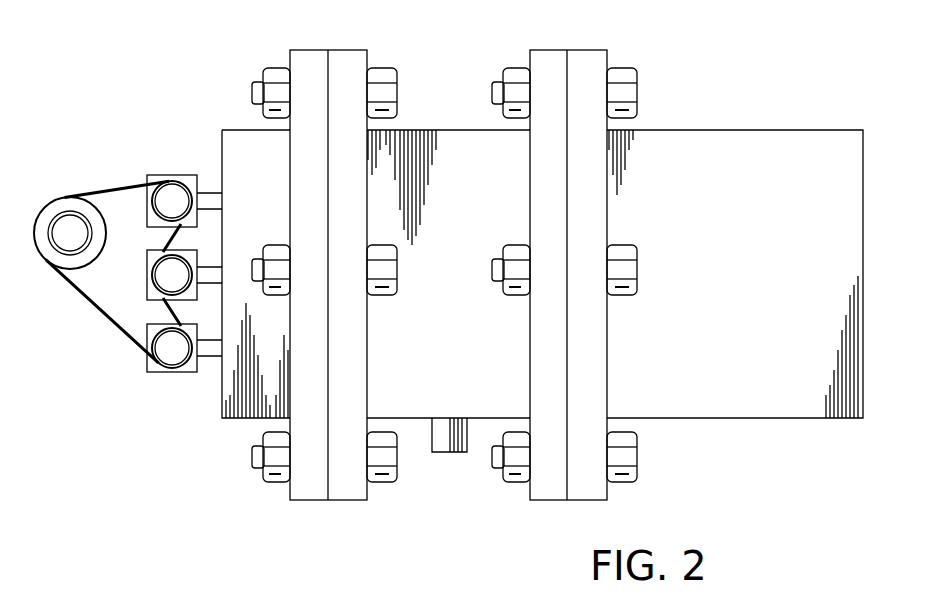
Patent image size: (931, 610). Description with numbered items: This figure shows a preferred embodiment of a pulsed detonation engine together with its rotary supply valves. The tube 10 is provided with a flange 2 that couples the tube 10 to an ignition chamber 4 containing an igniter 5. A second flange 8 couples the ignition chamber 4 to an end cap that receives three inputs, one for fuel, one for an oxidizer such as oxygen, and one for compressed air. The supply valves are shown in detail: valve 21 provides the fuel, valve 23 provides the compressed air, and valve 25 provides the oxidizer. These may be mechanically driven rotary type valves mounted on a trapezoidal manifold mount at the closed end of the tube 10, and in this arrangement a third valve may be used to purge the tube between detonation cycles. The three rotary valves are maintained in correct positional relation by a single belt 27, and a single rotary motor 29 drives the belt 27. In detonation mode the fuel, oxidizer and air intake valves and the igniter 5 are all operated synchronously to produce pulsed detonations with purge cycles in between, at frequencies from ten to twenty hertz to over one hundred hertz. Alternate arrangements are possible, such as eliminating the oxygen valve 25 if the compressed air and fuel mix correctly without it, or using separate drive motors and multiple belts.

The flange 2 is at (595, 66).
The ignition chamber 4 is at (446, 152).
The igniter 5 is at (450, 445).
The flange 8 is at (355, 52).
The tube 10 is at (754, 130).
The valve 21 is at (168, 192).
The valve 23 is at (168, 273).
The valve 25 is at (172, 352).
The belt 27 is at (115, 192).
The rotary motor 29 is at (60, 268).